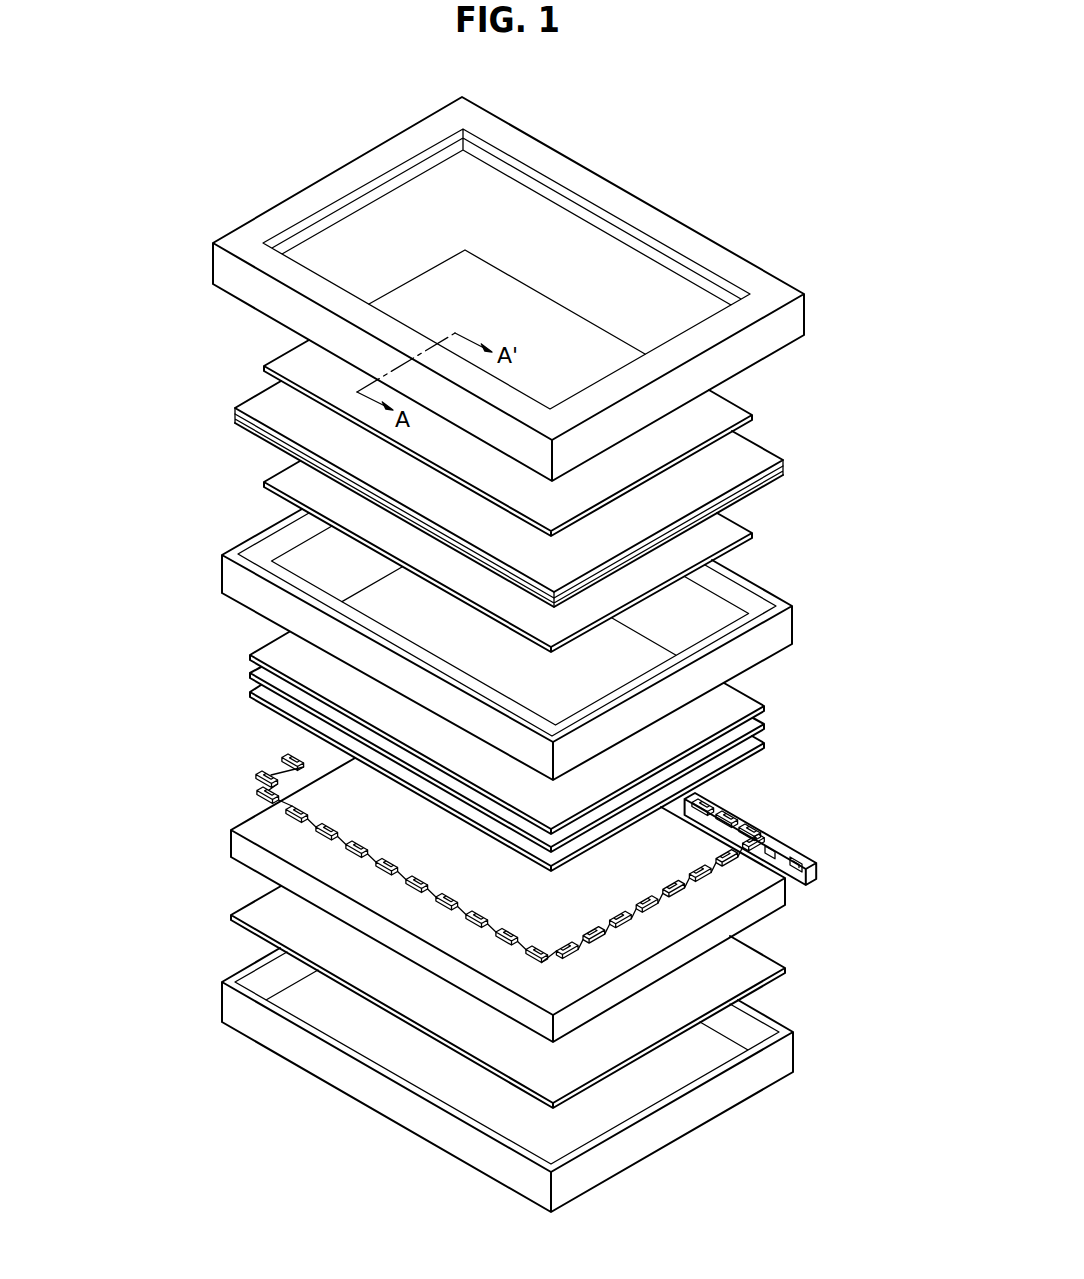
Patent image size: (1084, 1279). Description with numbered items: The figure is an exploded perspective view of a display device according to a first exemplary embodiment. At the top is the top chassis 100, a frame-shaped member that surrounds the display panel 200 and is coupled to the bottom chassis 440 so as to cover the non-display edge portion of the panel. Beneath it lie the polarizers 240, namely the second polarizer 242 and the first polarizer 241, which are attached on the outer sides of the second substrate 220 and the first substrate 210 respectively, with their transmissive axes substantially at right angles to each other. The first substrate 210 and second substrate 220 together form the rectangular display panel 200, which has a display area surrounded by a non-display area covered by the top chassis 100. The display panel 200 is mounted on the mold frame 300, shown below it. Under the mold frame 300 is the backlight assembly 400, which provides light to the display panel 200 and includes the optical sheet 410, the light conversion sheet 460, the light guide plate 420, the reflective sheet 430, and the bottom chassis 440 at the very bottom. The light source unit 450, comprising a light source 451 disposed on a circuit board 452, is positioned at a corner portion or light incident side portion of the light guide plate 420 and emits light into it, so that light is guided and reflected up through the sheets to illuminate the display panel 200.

The top chassis 100 is at (800, 327).
The display panel 200 is at (577, 494).
The first substrate 210 is at (764, 477).
The second substrate 220 is at (766, 461).
The polarizers 240 is at (432, 451).
The first polarizer 241 is at (462, 556).
The second polarizer 242 is at (292, 361).
The mold frame 300 is at (747, 609).
The backlight assembly 400 is at (135, 680).
The optical sheet 410 is at (250, 690).
The light guide plate 420 is at (236, 840).
The reflective sheet 430 is at (236, 923).
The bottom chassis 440 is at (231, 1001).
The light source unit 450 is at (807, 844).
The light source 451 is at (800, 852).
The circuit board 452 is at (806, 877).
The light conversion sheet 460 is at (293, 786).